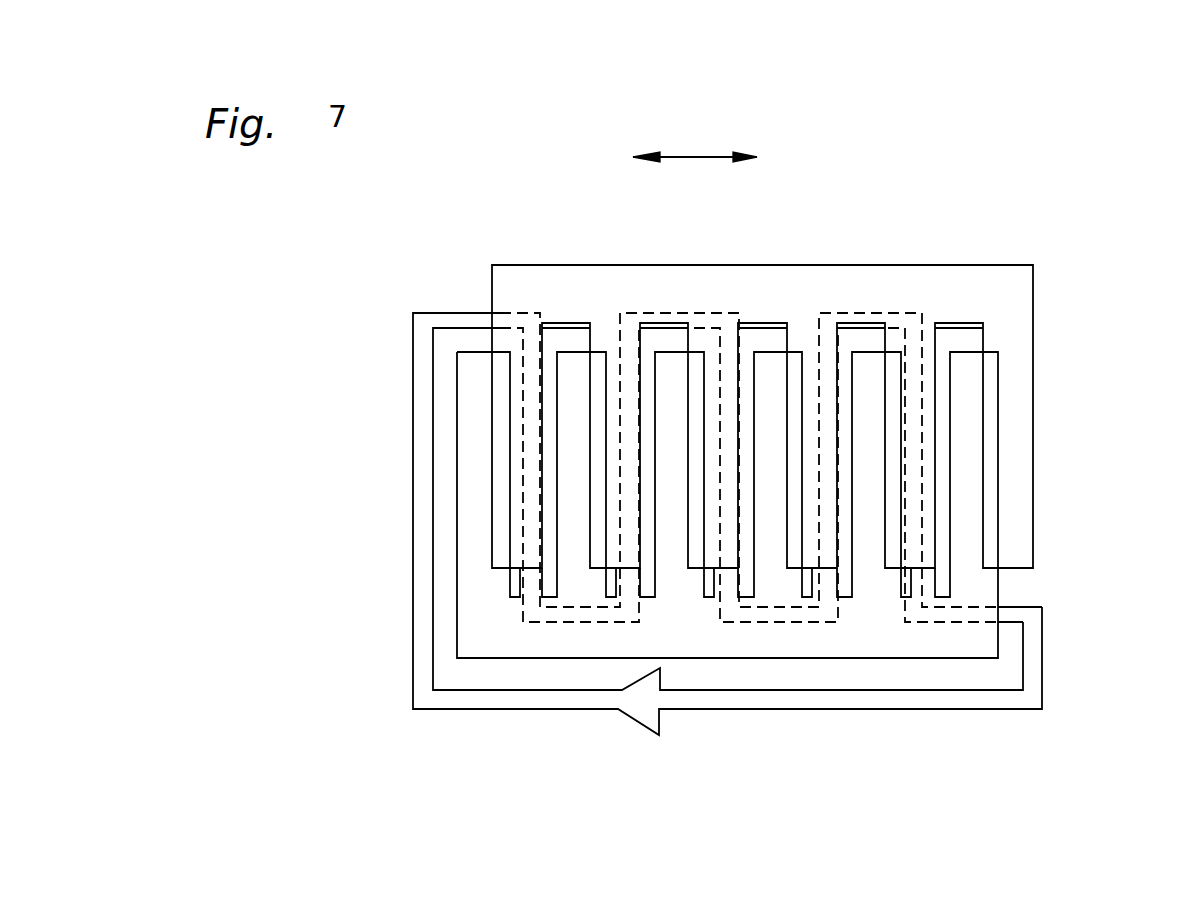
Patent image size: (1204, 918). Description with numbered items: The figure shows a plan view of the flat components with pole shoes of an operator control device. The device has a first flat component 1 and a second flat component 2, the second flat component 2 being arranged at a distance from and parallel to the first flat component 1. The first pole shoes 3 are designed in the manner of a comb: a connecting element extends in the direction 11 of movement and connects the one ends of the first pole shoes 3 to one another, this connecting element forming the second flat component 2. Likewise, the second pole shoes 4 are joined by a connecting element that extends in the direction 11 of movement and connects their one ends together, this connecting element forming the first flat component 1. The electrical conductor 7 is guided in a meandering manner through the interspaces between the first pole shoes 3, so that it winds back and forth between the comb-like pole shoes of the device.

The first flat component 1 is at (962, 262).
The second flat component 2 is at (872, 665).
The first pole shoes 3 is at (462, 403).
The second pole shoes 4 is at (493, 467).
The electrical conductor 7 is at (1038, 606).
The direction of movement 11 is at (688, 157).